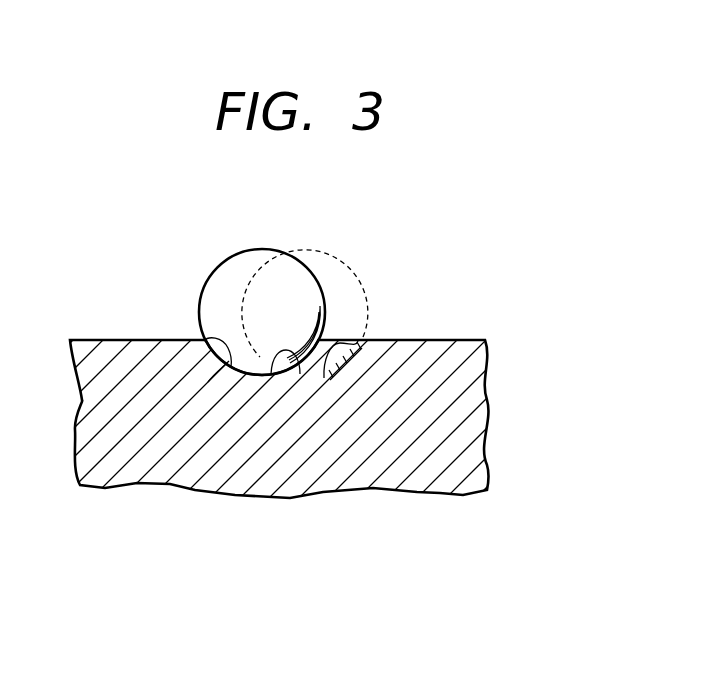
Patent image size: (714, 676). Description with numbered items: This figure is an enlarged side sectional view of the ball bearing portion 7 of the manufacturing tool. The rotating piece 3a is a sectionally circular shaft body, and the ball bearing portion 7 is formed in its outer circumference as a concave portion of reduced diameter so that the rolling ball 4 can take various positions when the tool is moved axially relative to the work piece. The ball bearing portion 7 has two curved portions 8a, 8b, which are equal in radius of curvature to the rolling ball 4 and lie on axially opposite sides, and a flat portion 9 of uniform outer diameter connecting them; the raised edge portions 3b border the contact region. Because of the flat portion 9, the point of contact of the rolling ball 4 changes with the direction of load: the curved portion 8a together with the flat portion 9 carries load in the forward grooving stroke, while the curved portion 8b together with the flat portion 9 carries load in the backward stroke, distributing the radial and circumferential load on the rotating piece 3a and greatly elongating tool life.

The rotating piece 3a is at (492, 402).
The raised edge portion 3b is at (117, 338).
The rolling ball 4 is at (232, 253).
The ball bearing portion 7 is at (335, 331).
The curved portion 8a is at (205, 385).
The curved portion 8b is at (324, 376).
The flat portion 9 is at (278, 374).